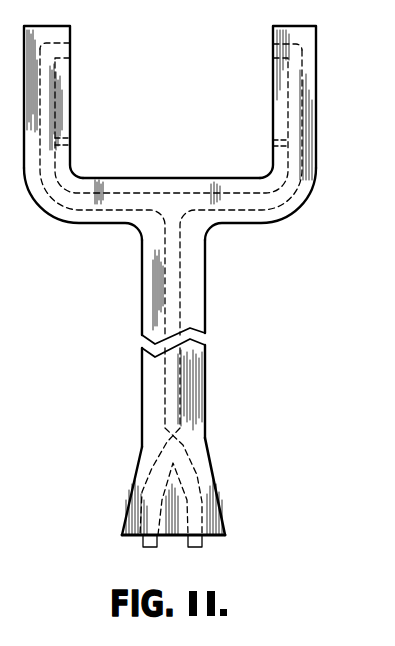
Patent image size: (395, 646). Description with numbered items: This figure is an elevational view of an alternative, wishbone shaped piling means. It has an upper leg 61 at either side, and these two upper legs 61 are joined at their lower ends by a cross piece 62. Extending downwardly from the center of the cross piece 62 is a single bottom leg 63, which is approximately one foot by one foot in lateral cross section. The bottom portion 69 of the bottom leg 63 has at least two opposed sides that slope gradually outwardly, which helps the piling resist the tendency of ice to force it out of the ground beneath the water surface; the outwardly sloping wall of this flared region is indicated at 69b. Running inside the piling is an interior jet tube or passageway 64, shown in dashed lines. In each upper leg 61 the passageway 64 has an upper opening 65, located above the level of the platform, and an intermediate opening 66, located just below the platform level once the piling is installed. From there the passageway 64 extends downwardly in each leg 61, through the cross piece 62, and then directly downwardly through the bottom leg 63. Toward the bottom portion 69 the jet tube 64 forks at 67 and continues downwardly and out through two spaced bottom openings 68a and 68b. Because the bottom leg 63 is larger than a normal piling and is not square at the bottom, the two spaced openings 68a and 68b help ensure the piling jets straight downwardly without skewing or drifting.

The leg 61 is at (70, 96).
The cross piece 62 is at (127, 178).
The bottom leg 63 is at (206, 357).
The interior jet tube or passageway 64 is at (105, 200).
The upper opening 65 is at (70, 48).
The intermediate opening 66 is at (62, 138).
The fork 67 is at (170, 438).
The bottom opening 68a is at (155, 548).
The bottom opening 68b is at (193, 548).
The bottom portion 69 is at (213, 446).
The base end wall 69b is at (130, 543).